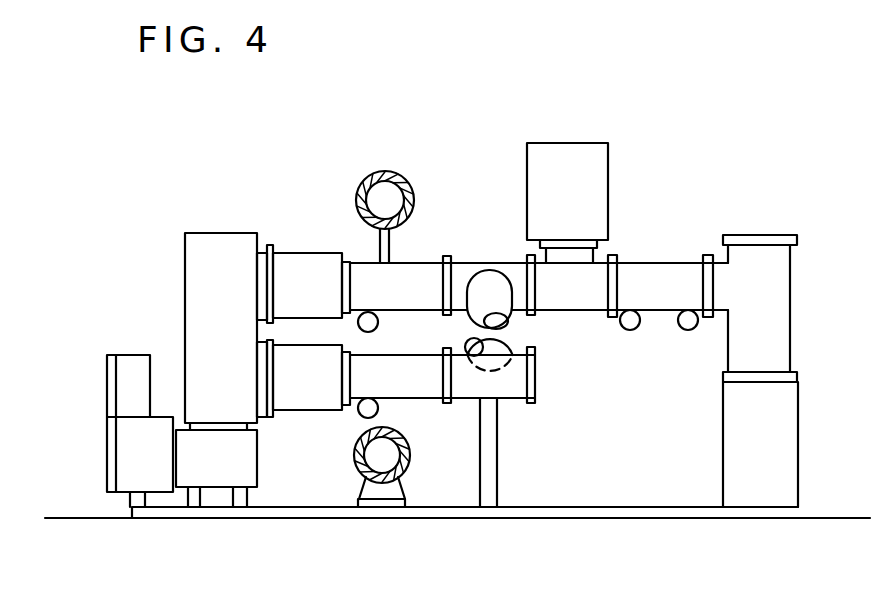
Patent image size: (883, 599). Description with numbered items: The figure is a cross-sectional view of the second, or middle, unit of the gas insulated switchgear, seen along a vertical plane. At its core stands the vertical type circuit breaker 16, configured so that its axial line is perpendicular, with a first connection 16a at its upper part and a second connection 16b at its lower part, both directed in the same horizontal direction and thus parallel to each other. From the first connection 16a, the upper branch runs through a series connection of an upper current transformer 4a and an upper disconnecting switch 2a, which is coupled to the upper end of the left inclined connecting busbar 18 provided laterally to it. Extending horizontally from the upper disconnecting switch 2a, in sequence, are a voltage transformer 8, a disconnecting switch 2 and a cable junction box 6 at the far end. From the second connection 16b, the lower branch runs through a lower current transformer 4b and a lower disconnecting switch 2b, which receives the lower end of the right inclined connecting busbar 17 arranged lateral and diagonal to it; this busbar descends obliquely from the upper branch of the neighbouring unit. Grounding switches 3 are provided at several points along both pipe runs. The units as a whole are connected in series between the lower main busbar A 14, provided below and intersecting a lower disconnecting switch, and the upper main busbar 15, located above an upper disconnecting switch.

The disconnecting switch 2 is at (666, 263).
The upper disconnecting switch 2a is at (423, 262).
The lower disconnecting switch 2b is at (423, 400).
The grounding switch 3 is at (379, 324).
The upper current transformer 4a is at (302, 253).
The lower current transformer 4b is at (297, 410).
The cable junction box 6 is at (790, 343).
The voltage transformer 8 is at (608, 208).
The main busbar A 14 is at (410, 457).
The upper main busbar 15 is at (407, 182).
The vertical type circuit breaker 16 is at (234, 232).
The first connection 16a is at (272, 278).
The second connection 16b is at (267, 383).
The right inclined connecting busbar 17 is at (535, 371).
The left inclined connecting busbar 18 is at (480, 288).